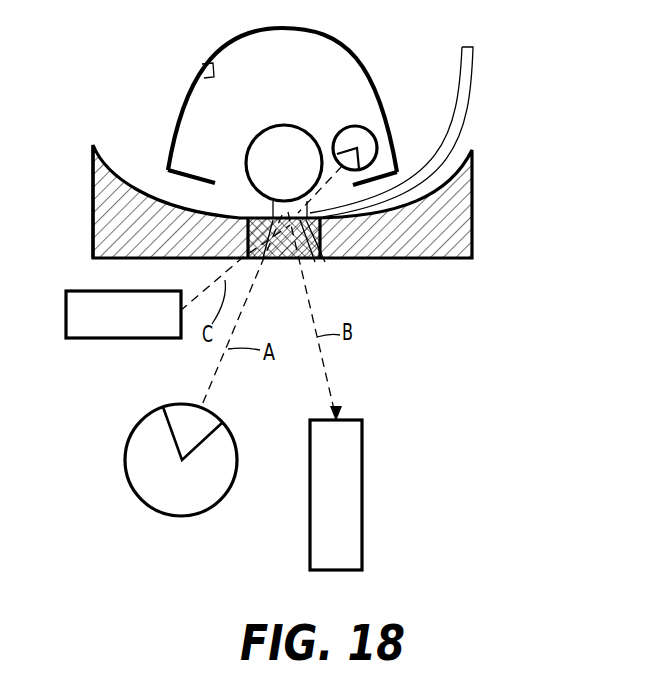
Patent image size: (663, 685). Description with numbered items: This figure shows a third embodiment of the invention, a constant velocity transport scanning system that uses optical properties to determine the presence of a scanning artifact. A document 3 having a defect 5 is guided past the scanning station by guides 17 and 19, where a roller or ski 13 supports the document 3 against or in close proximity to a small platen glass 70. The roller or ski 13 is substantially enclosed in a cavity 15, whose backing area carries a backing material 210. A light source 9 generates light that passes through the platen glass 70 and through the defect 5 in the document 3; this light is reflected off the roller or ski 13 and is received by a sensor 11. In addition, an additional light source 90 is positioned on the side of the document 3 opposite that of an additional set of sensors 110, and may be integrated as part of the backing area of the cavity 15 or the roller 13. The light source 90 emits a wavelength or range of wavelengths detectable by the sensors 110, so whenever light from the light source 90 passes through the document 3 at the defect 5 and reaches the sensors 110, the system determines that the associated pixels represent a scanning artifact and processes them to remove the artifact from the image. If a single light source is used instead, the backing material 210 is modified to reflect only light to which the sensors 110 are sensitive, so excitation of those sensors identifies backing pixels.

The document 3 is at (472, 75).
The defect 5 is at (310, 262).
The light source 9 is at (177, 516).
The sensor 11 is at (363, 528).
The roller or ski 13 is at (275, 127).
The cavity 15 is at (335, 40).
The guide 17 is at (473, 208).
The guide 19 is at (93, 184).
The platen glass 70 is at (322, 262).
The additional light source 90 is at (342, 127).
The additional set of sensors 110 is at (113, 338).
The backing material 210 is at (202, 68).